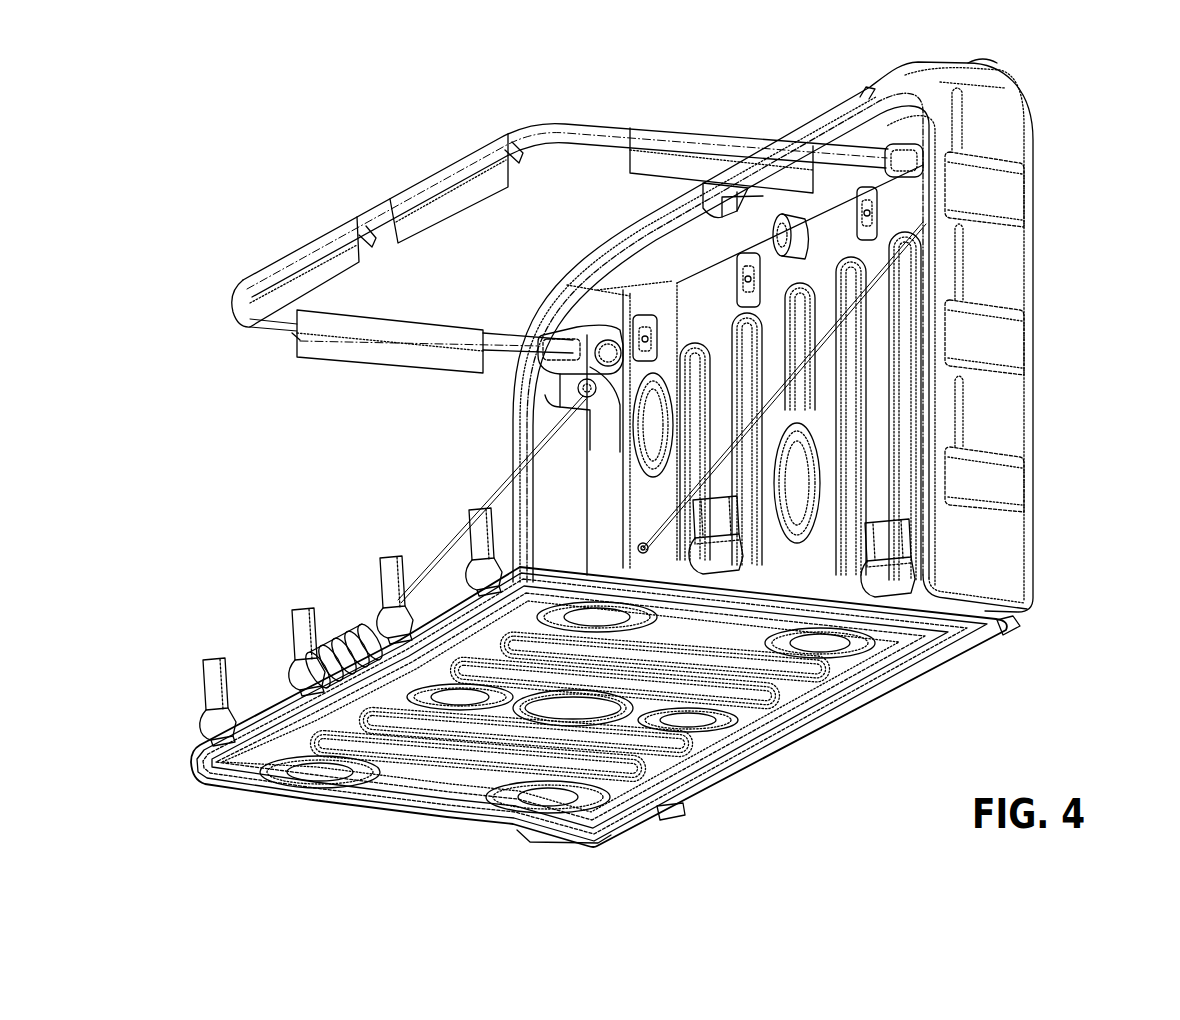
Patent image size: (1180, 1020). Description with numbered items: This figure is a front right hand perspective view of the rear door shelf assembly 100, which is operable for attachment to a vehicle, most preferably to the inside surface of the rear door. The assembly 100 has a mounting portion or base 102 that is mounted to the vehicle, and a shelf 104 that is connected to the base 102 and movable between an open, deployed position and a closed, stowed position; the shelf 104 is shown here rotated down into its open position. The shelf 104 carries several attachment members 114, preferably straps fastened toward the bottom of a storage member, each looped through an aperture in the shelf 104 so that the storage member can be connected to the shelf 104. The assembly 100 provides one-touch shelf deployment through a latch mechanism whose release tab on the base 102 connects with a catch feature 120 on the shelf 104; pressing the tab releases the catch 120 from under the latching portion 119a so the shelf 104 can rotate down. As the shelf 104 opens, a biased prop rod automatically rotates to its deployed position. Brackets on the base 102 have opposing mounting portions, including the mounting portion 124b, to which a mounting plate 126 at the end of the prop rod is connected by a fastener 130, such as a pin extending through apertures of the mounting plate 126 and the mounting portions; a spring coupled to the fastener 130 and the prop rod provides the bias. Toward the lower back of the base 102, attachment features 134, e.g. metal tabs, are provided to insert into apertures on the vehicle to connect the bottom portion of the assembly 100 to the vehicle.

The rear door shelf assembly 100 is at (1100, 160).
The mounting portion or base 102 is at (1014, 268).
The shelf 104 is at (200, 746).
The attachment member 114 is at (897, 547).
The latching portion 119a is at (714, 209).
The catch feature 120 is at (326, 650).
The mounting portion 124b is at (588, 398).
The mounting plate 126 is at (595, 333).
The fastener 130 is at (606, 340).
The attachment feature 134 is at (670, 812).